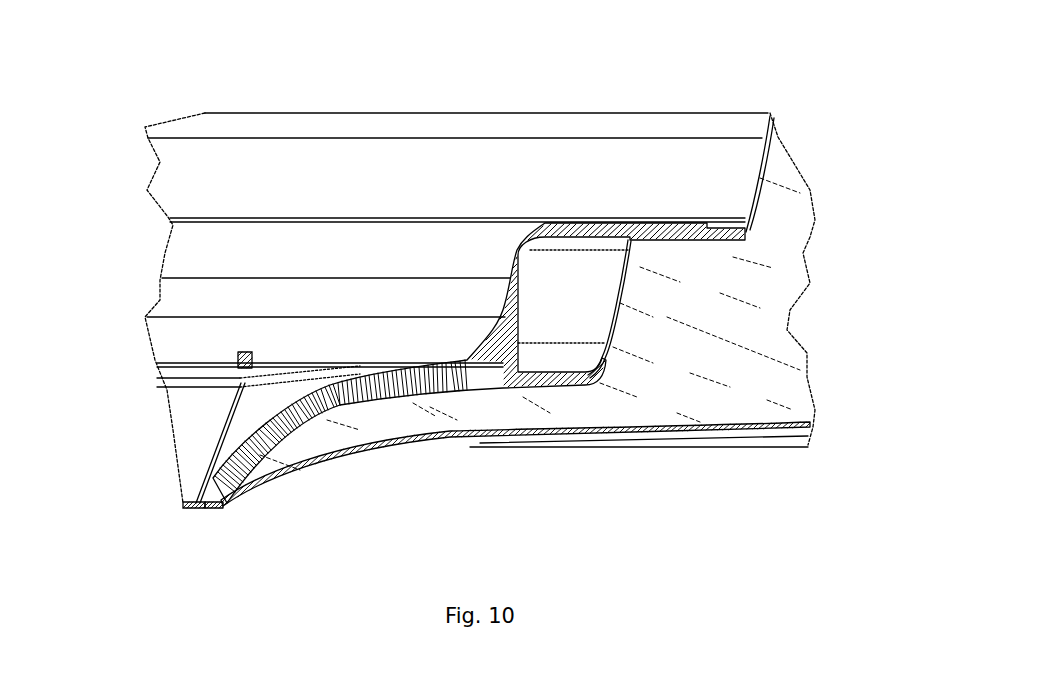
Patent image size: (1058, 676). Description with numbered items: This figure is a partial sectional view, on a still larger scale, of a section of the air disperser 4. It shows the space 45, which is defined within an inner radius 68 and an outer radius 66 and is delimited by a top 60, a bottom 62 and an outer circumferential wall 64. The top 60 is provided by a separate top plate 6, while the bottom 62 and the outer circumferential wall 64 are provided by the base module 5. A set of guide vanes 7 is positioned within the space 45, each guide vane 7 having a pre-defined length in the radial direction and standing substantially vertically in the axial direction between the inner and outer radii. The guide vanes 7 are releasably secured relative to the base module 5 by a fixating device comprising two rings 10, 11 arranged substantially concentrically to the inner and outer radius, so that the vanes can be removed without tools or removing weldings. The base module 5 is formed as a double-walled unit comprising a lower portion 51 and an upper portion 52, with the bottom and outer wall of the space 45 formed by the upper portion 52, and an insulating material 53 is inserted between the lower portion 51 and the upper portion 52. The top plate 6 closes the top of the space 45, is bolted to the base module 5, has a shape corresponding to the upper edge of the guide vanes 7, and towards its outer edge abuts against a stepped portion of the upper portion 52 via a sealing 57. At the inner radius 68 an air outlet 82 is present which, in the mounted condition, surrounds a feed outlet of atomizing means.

The air disperser 4 is at (142, 108).
The base module 5 is at (748, 451).
The top plate 6 is at (545, 275).
The guide vane 7 is at (513, 382).
The ring of fixating device 10 is at (463, 362).
The ring of fixating device 11 is at (355, 388).
The space 45 is at (607, 291).
The lower portion 51 is at (773, 421).
The upper portion 52 is at (618, 290).
The insulating material 53 is at (775, 243).
The sealing 57 is at (707, 235).
The top 60 is at (590, 222).
The bottom 62 is at (512, 468).
The outer circumferential wall 64 is at (613, 381).
The outer radius 66 is at (627, 248).
The inner radius 68 is at (197, 505).
The air outlet 82 is at (217, 506).